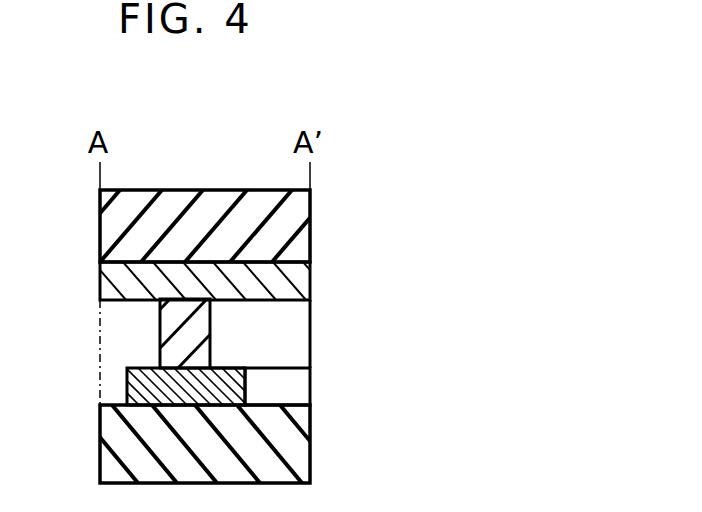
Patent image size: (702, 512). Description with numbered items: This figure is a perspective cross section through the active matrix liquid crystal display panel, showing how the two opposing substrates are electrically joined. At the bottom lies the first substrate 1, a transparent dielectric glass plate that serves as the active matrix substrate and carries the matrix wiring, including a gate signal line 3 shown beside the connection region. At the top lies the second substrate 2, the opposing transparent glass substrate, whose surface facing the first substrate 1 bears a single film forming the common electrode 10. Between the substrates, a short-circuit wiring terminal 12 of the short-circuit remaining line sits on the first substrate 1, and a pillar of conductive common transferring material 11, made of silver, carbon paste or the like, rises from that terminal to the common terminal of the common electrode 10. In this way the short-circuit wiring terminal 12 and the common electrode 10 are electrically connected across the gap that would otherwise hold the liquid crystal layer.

The first substrate 1 is at (293, 448).
The second substrate 2 is at (297, 233).
The gate signal line 3 is at (303, 390).
The common electrode 10 is at (295, 277).
The conductive common transferring material 11 is at (168, 334).
The short-circuit wiring terminal 12 is at (150, 382).